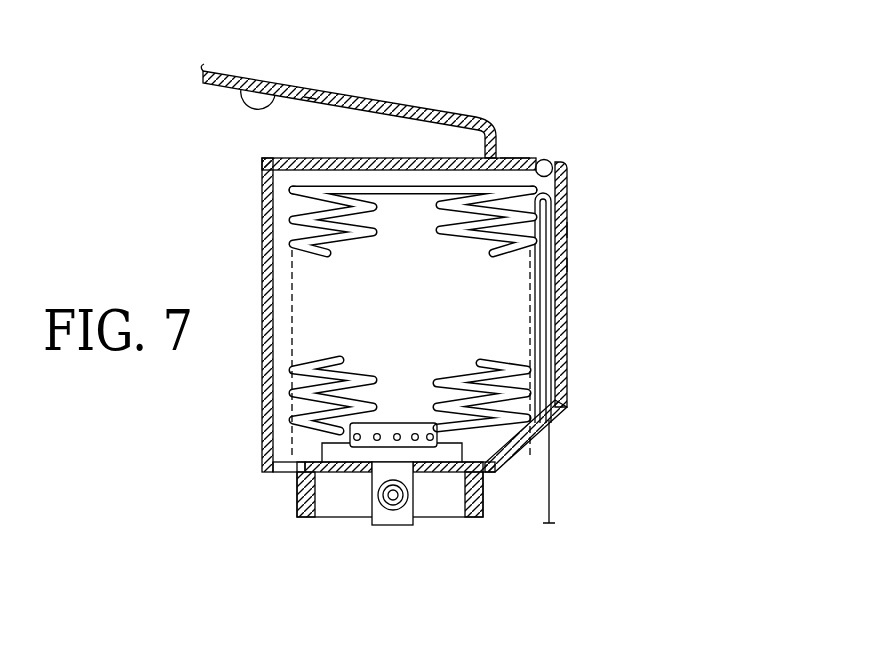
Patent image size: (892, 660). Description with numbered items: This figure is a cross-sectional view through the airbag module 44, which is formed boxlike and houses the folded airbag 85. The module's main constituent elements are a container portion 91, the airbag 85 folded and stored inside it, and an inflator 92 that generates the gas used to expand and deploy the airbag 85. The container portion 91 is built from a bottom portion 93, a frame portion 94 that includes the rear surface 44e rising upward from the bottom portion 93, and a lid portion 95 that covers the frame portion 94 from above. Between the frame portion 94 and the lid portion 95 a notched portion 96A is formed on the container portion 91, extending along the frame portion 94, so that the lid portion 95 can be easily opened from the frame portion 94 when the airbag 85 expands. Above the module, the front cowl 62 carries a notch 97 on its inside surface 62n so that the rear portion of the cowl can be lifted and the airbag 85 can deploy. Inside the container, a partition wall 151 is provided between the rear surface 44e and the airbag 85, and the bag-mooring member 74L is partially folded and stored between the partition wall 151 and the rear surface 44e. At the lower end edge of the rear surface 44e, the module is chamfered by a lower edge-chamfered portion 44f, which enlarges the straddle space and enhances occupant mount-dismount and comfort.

The airbag module 44 is at (561, 126).
The front cowl 62 is at (386, 92).
The inside surface of the front cowl 62n is at (310, 98).
The notch 97 is at (248, 80).
The lid portion 95 is at (518, 160).
The notched portion 96A is at (537, 160).
The frame portion 94 is at (580, 163).
The airbag 85 is at (552, 203).
The partition wall 151 is at (543, 278).
The container portion 91 is at (578, 230).
The rear surface 44e is at (568, 265).
The lower edge-chamfered portion 44f is at (540, 433).
The bag-mooring member 74L is at (549, 492).
The inflator 92 is at (367, 448).
The bottom portion 93 is at (442, 450).